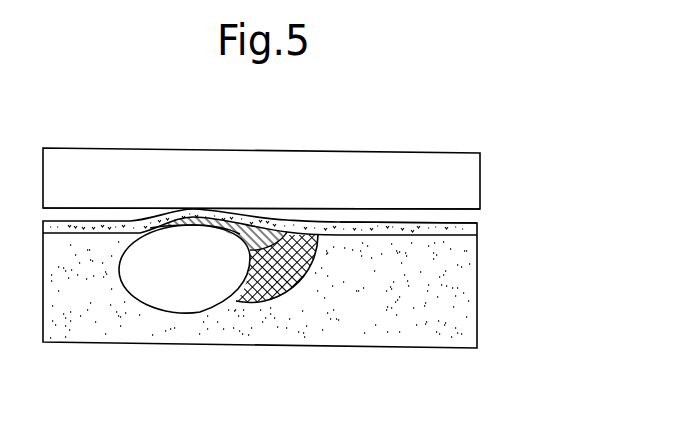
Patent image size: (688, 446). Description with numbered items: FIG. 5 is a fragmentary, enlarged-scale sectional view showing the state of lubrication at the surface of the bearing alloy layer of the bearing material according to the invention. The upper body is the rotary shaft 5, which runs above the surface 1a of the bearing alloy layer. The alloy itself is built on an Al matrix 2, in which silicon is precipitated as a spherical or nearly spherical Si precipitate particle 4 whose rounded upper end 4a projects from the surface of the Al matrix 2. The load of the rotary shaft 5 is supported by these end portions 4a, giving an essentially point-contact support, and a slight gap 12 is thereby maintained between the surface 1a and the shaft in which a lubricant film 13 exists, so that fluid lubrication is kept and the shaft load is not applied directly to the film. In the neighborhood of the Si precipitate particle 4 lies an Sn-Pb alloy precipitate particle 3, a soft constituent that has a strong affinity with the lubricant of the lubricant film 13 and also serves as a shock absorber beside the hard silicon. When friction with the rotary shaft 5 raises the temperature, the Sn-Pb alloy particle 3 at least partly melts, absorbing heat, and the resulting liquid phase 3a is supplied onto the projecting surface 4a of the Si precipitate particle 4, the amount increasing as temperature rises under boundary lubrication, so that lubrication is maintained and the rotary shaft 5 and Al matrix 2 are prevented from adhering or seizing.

The rotary shaft 5 is at (433, 170).
The surface of bearing alloy layer 1a is at (357, 234).
The gap 12 is at (467, 217).
The lubricant film 13 is at (474, 228).
The Al matrix 2 is at (460, 300).
The Sn-Pb alloy precipitate particle 3 is at (280, 293).
The liquid phase 3a is at (170, 213).
The Si precipitate particle 4 is at (183, 283).
The rounded upper end of Si precipitate particle 4a is at (190, 230).